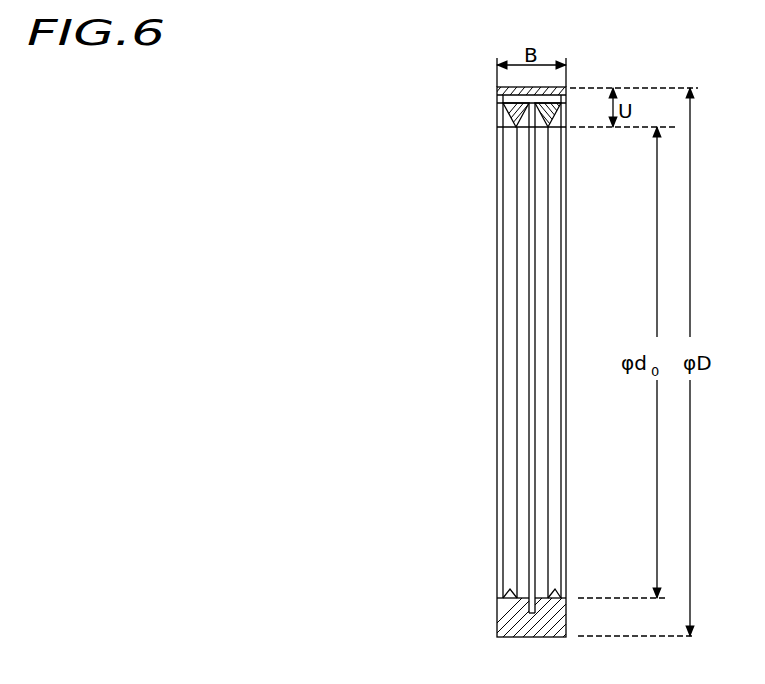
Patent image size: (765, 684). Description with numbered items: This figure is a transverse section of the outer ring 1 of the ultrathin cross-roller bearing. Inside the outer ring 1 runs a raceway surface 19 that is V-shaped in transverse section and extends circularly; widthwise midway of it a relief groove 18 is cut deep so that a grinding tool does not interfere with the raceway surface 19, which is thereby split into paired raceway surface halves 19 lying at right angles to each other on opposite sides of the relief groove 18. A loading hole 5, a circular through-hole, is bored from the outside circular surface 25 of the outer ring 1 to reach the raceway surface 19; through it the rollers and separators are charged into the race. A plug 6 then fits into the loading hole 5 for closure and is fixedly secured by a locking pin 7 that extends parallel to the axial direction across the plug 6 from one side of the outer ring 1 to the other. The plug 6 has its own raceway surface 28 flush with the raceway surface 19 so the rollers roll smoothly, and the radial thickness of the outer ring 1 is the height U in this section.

The outer ring 1 is at (467, 283).
The loading hole 5 is at (543, 137).
The plug 6 is at (508, 114).
The locking pin 7 is at (505, 99).
The relief groove 18 is at (533, 302).
The raceway surface 19 is at (547, 395).
The outside circular surface 25 is at (510, 596).
The raceway surface of the plug 28 is at (522, 130).